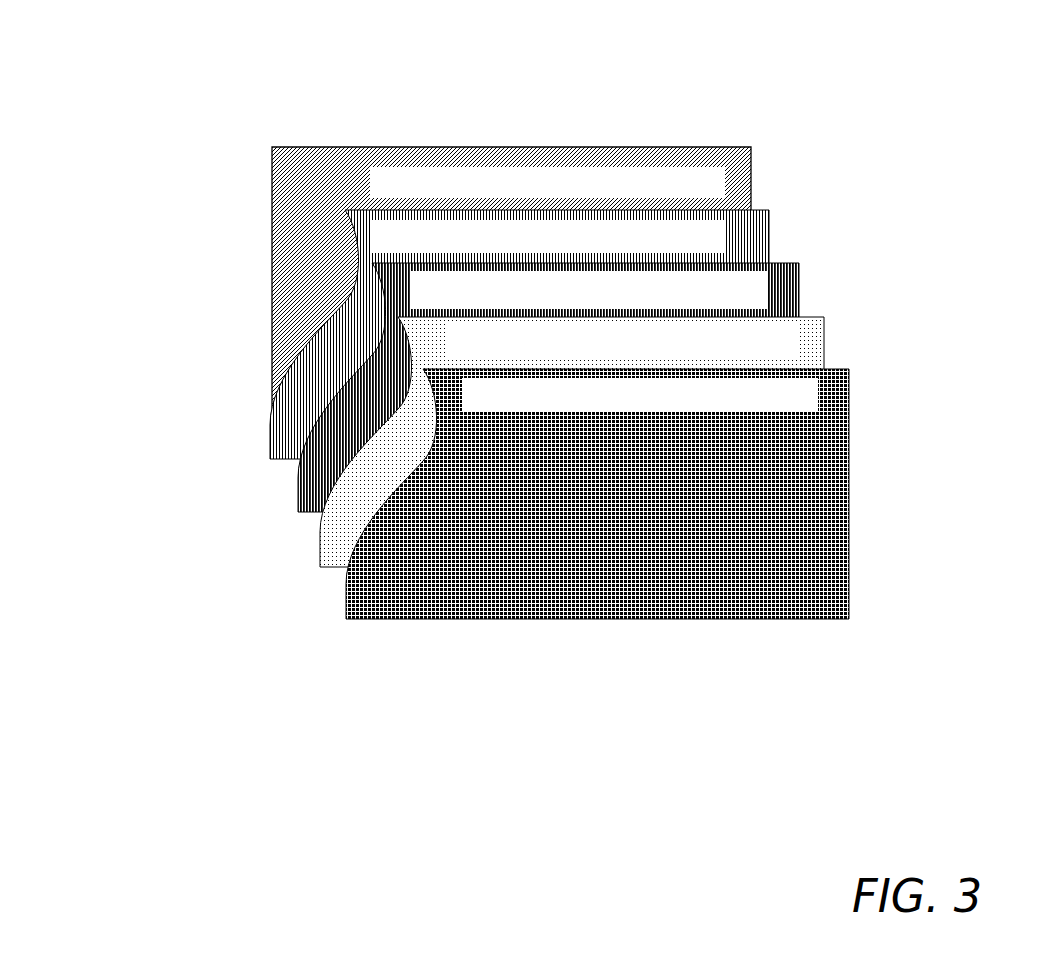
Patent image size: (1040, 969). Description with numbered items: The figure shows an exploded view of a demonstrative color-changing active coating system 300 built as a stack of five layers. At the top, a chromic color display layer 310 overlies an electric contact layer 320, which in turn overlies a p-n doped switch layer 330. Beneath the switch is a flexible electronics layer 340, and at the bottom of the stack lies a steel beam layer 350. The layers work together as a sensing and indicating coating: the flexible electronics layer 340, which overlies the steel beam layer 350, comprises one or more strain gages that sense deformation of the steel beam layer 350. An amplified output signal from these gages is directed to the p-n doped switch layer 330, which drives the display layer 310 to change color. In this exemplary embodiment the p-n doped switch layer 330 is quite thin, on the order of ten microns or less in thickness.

The coating system 300 is at (551, 331).
The chromic color display layer 310 is at (352, 613).
The electric contact layer 320 is at (326, 560).
The p-n doped switch layer 330 is at (300, 508).
The flexible electronics layer 340 is at (272, 444).
The steel beam layer 350 is at (272, 268).